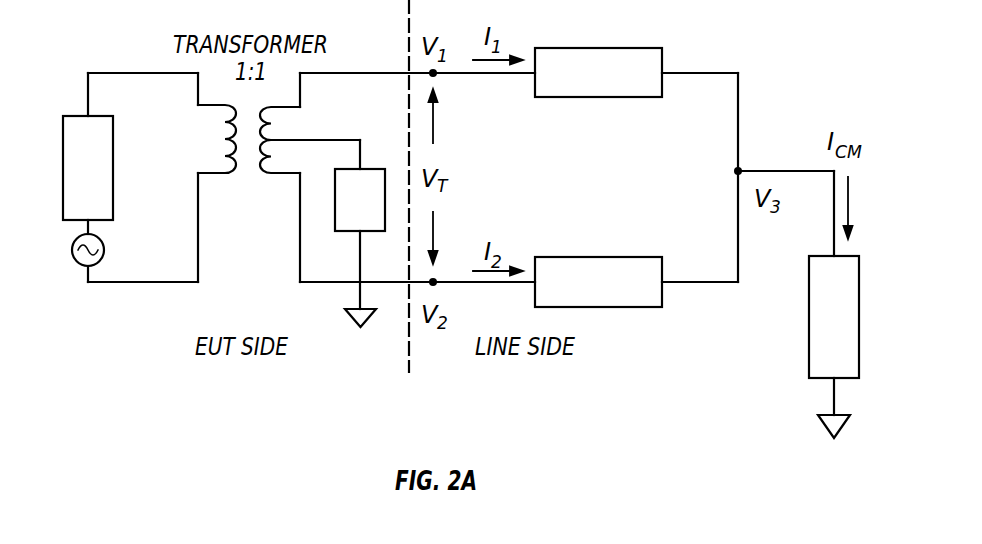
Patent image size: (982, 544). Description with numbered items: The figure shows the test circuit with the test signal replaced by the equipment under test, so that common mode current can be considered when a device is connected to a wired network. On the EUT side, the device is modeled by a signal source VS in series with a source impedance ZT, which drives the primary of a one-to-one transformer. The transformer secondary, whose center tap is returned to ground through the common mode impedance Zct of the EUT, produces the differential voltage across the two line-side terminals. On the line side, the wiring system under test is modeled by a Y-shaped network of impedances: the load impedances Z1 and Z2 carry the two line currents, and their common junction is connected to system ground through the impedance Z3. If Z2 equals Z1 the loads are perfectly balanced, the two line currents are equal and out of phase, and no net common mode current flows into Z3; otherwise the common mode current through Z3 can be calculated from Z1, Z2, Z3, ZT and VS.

The source impedance ZT is at (88, 168).
The signal source VS is at (71, 249).
The common mode impedance of the EUT Zct is at (360, 200).
The load impedance Z1 is at (598, 72).
The load impedance Z2 is at (598, 282).
The common mode impedance of the network Z3 is at (834, 317).